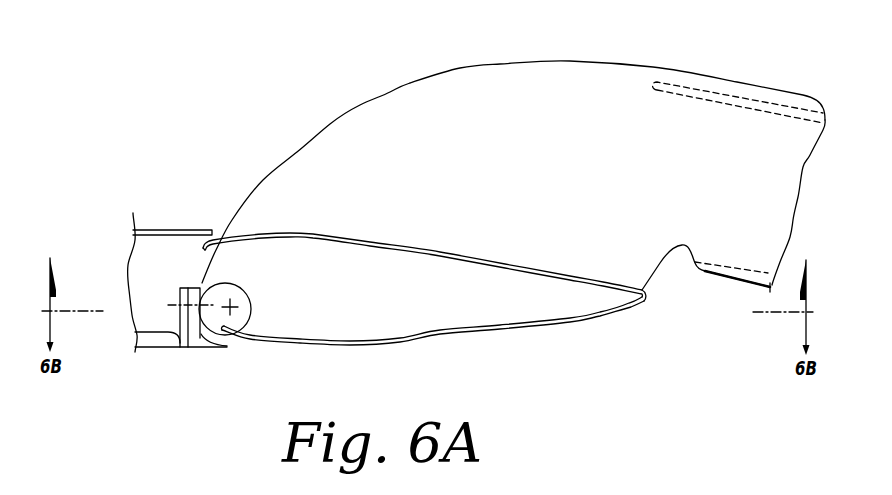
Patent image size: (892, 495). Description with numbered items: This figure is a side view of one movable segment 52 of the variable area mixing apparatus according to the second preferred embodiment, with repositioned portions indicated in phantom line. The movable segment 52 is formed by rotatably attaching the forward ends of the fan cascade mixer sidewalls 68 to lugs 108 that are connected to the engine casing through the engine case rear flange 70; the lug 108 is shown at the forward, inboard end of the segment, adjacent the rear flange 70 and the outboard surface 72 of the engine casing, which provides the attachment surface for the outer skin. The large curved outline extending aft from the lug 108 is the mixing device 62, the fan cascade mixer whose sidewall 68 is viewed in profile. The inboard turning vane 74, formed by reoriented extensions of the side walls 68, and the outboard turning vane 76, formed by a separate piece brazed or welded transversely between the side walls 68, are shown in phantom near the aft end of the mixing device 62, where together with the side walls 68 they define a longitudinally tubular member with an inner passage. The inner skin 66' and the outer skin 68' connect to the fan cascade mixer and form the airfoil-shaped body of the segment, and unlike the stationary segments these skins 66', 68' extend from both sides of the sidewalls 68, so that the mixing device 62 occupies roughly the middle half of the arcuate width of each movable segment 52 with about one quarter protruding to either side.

The movable segment 52 is at (277, 144).
The mixing device 62 is at (659, 61).
The fan cascade mixer sidewall 68 is at (617, 78).
The outer skin 68' is at (424, 257).
The inner skin 66' is at (433, 343).
The engine case rear flange 70 is at (167, 340).
The outboard surface 72 is at (160, 233).
The inboard turning vane 74 is at (738, 265).
The outboard turning vane 76 is at (703, 95).
The lug 108 is at (252, 299).